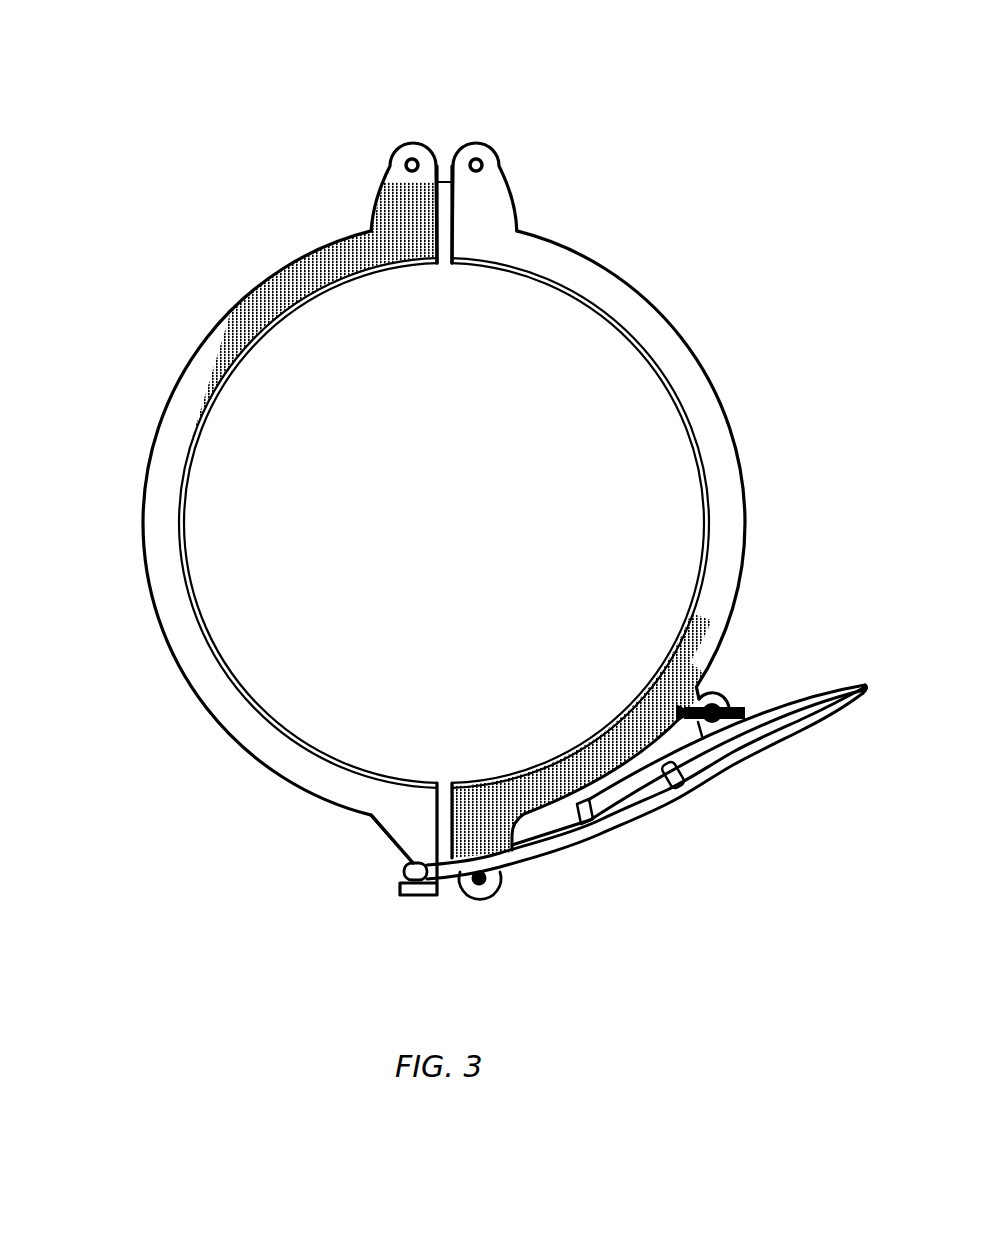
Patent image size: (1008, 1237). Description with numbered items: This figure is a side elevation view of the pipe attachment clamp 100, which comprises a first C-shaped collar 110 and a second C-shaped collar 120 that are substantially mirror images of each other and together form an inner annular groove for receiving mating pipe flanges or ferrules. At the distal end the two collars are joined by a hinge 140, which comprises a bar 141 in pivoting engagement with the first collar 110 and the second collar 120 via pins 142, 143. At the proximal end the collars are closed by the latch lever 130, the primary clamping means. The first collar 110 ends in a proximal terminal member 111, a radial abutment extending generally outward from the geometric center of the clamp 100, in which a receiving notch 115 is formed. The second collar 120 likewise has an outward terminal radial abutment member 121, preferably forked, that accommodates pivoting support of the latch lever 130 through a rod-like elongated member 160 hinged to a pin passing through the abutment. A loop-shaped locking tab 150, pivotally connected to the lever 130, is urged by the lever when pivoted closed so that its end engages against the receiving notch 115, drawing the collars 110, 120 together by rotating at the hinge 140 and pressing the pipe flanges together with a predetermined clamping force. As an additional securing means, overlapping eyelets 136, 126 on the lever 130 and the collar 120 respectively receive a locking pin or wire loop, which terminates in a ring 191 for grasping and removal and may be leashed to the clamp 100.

The pipe attachment clamp 100 is at (157, 165).
The first C-shaped collar 110 is at (236, 735).
The proximal terminal member 111 is at (400, 889).
The receiving notch 115 is at (388, 870).
The second C-shaped collar 120 is at (657, 303).
The terminal radial abutment member 121 is at (483, 893).
The eyelet 126 is at (718, 683).
The latch lever 130 is at (757, 732).
The eyelet 136 is at (748, 689).
The hinge 140 is at (497, 98).
The bar 141 is at (430, 127).
The pin 142 is at (398, 147).
The pin 143 is at (468, 148).
The locking tab 150 is at (496, 864).
The elongated member 160 is at (567, 824).
The ring 191 is at (689, 702).